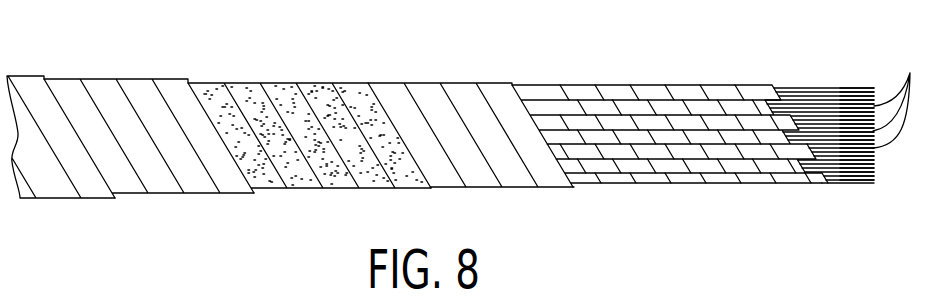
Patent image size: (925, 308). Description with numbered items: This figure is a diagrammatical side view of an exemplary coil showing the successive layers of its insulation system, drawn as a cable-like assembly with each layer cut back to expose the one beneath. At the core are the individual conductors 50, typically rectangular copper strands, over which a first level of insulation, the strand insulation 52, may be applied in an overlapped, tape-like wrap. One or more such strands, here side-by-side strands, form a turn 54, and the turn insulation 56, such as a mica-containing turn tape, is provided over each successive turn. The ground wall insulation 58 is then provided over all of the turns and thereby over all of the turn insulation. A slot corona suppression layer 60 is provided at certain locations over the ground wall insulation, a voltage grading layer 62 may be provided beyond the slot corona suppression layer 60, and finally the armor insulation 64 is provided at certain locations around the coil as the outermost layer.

The conductors 50 is at (910, 77).
The strand insulation 52 is at (778, 87).
The turn 54 is at (834, 78).
The turn insulation 56 is at (615, 85).
The ground wall insulation 58 is at (426, 84).
The slot corona suppression layer 60 is at (280, 83).
The voltage grading layer 62 is at (99, 80).
The armor insulation 64 is at (17, 80).